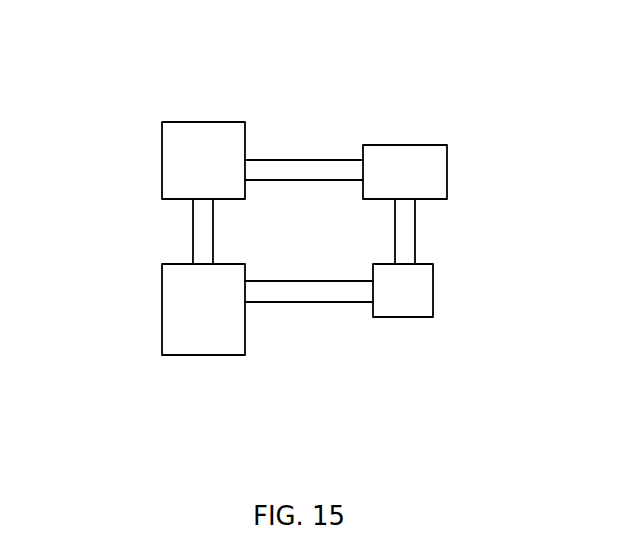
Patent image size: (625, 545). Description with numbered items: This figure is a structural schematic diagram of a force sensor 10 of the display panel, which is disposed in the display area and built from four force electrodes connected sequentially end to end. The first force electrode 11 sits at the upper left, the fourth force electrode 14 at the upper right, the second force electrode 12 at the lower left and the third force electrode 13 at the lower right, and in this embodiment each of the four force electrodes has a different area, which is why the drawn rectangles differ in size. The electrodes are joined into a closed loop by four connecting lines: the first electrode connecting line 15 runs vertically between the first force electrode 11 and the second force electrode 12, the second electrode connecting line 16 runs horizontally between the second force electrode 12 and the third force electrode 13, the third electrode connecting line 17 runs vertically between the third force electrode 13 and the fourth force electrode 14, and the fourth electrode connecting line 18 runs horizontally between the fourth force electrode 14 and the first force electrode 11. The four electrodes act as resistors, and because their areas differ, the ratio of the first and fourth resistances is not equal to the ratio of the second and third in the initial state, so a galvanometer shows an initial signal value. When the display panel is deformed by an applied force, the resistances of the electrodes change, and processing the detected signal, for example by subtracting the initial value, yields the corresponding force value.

The force sensor 10 is at (465, 46).
The first force electrode 11 is at (205, 122).
The second force electrode 12 is at (162, 307).
The third force electrode 13 is at (433, 292).
The fourth force electrode 14 is at (412, 145).
The first electrode connecting line 15 is at (193, 255).
The second electrode connecting line 16 is at (307, 302).
The third electrode connecting line 17 is at (415, 236).
The fourth electrode connecting line 18 is at (305, 160).